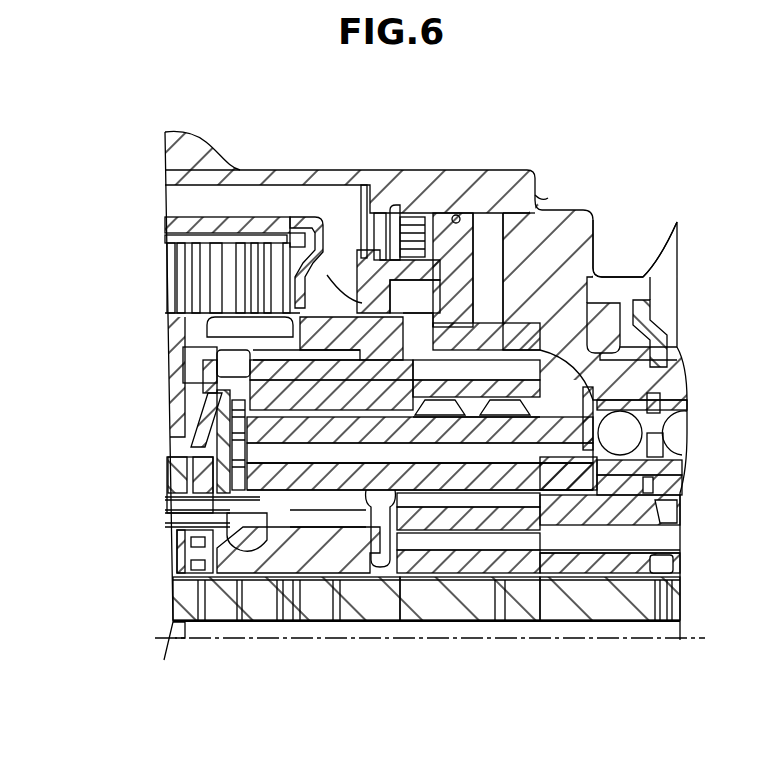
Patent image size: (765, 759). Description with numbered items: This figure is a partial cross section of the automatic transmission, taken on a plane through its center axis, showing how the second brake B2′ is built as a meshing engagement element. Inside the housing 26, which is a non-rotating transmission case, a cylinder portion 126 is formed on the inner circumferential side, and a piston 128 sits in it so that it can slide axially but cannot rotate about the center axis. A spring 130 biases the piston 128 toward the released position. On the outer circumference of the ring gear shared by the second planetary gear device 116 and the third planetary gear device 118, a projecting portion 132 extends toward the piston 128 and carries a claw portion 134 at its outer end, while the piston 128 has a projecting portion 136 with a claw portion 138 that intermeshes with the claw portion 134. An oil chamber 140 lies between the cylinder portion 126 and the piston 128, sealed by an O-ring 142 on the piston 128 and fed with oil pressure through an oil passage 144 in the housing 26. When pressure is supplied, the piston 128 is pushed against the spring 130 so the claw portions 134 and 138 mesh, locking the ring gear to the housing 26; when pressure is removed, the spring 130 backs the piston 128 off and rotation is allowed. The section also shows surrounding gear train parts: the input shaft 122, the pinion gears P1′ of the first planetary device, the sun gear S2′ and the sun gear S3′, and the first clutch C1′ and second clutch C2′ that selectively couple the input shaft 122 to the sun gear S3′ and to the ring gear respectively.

The housing 26 is at (193, 147).
The projecting portion 132 is at (307, 260).
The second clutch C2′ is at (265, 213).
The first clutch C1′ is at (152, 290).
The second brake B2′ is at (348, 223).
The claw portion 134 is at (372, 265).
The claw portion 138 is at (377, 262).
The projecting portion 136 is at (418, 255).
The spring 130 is at (433, 213).
The O-ring 142 is at (458, 215).
The cylinder portion 126 is at (507, 207).
The oil chamber 140 is at (541, 208).
The piston 128 is at (586, 211).
The oil passage 144 is at (583, 250).
The pinion gears P1′ is at (390, 560).
The sun gear S2′ is at (520, 563).
The sun gear S3′ is at (295, 580).
The third planetary gear device 118 is at (321, 600).
The second planetary gear device 116 is at (468, 600).
The input shaft 122 is at (595, 610).